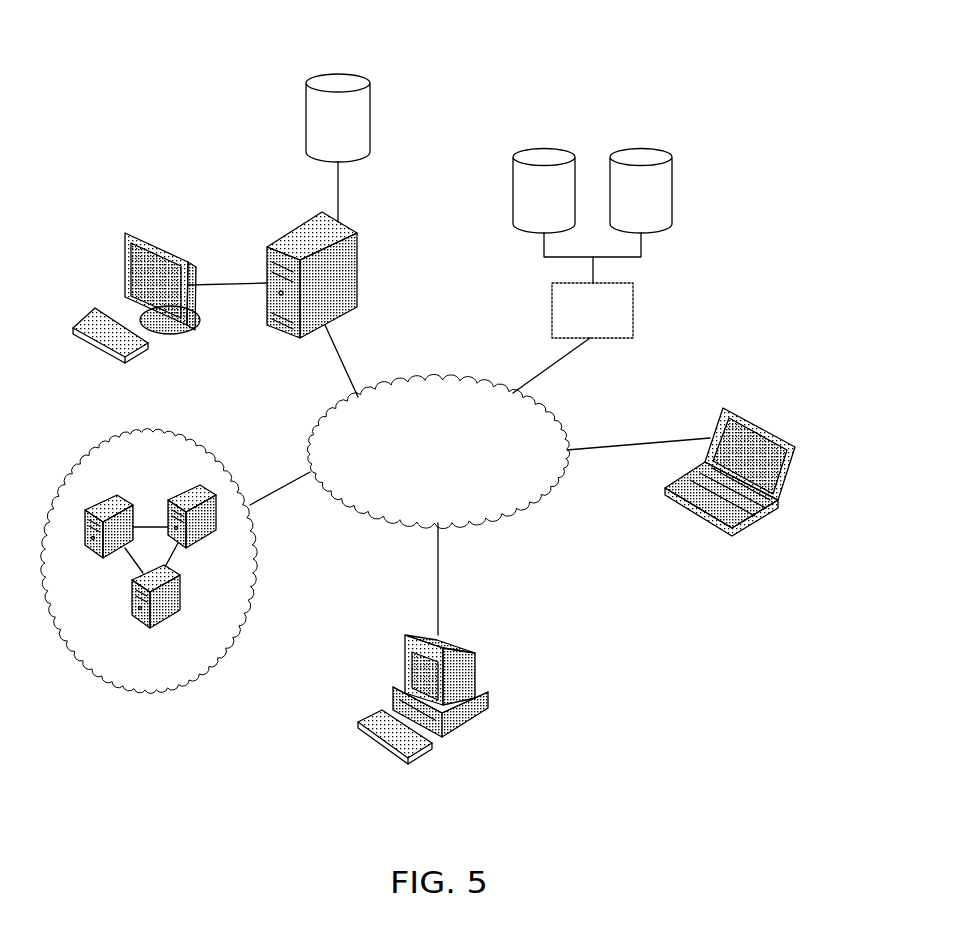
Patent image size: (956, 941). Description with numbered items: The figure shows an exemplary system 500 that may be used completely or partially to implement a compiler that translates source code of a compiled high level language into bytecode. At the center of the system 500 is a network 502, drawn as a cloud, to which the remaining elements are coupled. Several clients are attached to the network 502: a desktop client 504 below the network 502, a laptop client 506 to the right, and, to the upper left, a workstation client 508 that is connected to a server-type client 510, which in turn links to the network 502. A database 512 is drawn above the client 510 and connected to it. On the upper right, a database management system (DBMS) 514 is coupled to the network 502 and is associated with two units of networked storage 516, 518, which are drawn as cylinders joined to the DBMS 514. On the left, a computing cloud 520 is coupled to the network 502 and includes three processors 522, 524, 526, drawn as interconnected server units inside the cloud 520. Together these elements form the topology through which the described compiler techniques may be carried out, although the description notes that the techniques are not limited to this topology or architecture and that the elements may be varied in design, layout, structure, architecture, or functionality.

The system 500 is at (642, 61).
The network 502 is at (425, 460).
The client 504 is at (490, 692).
The client 506 is at (665, 490).
The client 508 is at (128, 236).
The client 510 is at (284, 236).
The database 512 is at (322, 132).
The database management system (DBMS) 514 is at (637, 312).
The networked storage 516 is at (528, 205).
The networked storage 518 is at (625, 205).
The computing cloud 520 is at (134, 440).
The processor 522 is at (114, 495).
The processor 524 is at (191, 487).
The processor 526 is at (133, 602).